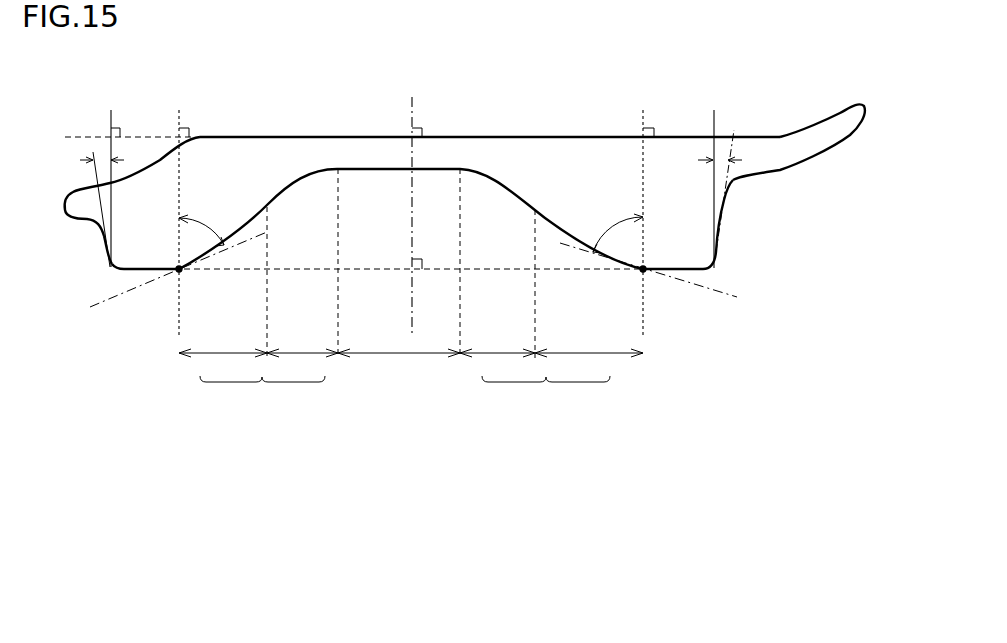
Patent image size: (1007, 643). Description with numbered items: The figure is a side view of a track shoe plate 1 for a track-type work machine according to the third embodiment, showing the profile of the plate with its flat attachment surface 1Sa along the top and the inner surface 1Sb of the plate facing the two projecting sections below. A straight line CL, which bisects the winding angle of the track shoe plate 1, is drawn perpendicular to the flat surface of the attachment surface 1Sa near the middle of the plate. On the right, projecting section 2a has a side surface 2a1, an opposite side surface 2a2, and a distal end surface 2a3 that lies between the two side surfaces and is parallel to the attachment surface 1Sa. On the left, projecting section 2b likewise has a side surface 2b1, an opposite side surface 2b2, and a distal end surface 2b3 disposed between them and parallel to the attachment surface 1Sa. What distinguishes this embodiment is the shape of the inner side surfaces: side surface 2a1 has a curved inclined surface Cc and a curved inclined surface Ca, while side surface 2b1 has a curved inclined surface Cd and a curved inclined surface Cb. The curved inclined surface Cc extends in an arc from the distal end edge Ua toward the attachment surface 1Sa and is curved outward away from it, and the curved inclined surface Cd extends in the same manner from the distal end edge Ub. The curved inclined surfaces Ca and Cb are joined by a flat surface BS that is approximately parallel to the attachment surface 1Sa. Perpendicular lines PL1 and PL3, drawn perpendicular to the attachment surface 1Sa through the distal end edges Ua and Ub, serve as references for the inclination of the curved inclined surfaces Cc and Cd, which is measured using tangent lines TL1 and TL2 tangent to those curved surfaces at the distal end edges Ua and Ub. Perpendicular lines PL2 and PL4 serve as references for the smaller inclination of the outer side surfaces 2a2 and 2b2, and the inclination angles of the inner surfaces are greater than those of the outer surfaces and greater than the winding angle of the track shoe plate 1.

The track shoe plate 1 is at (828, 137).
The attachment surface 1Sa is at (367, 137).
The inner surface 1Sb is at (367, 170).
The projecting section 2a is at (687, 245).
The side surface 2a1 is at (551, 381).
The side surface 2a2 is at (718, 222).
The distal end surface 2a3 is at (683, 270).
The projecting section 2b is at (133, 245).
The side surface 2b1 is at (258, 381).
The side surface 2b2 is at (106, 246).
The distal end surface 2b3 is at (143, 270).
The perpendicular line PL1 is at (639, 213).
The perpendicular line PL2 is at (712, 178).
The perpendicular line PL3 is at (175, 212).
The perpendicular line PL4 is at (105, 177).
The straight line CL is at (409, 206).
The tangent line TL1 is at (671, 279).
The tangent line TL2 is at (155, 276).
The distal end edge Ua is at (646, 272).
The distal end edge Ub is at (177, 272).
The curved inclined surface Cd is at (223, 363).
The curved inclined surface Cb is at (302, 363).
The flat surface BS is at (399, 363).
The curved inclined surface Ca is at (497, 363).
The curved inclined surface Cc is at (589, 363).